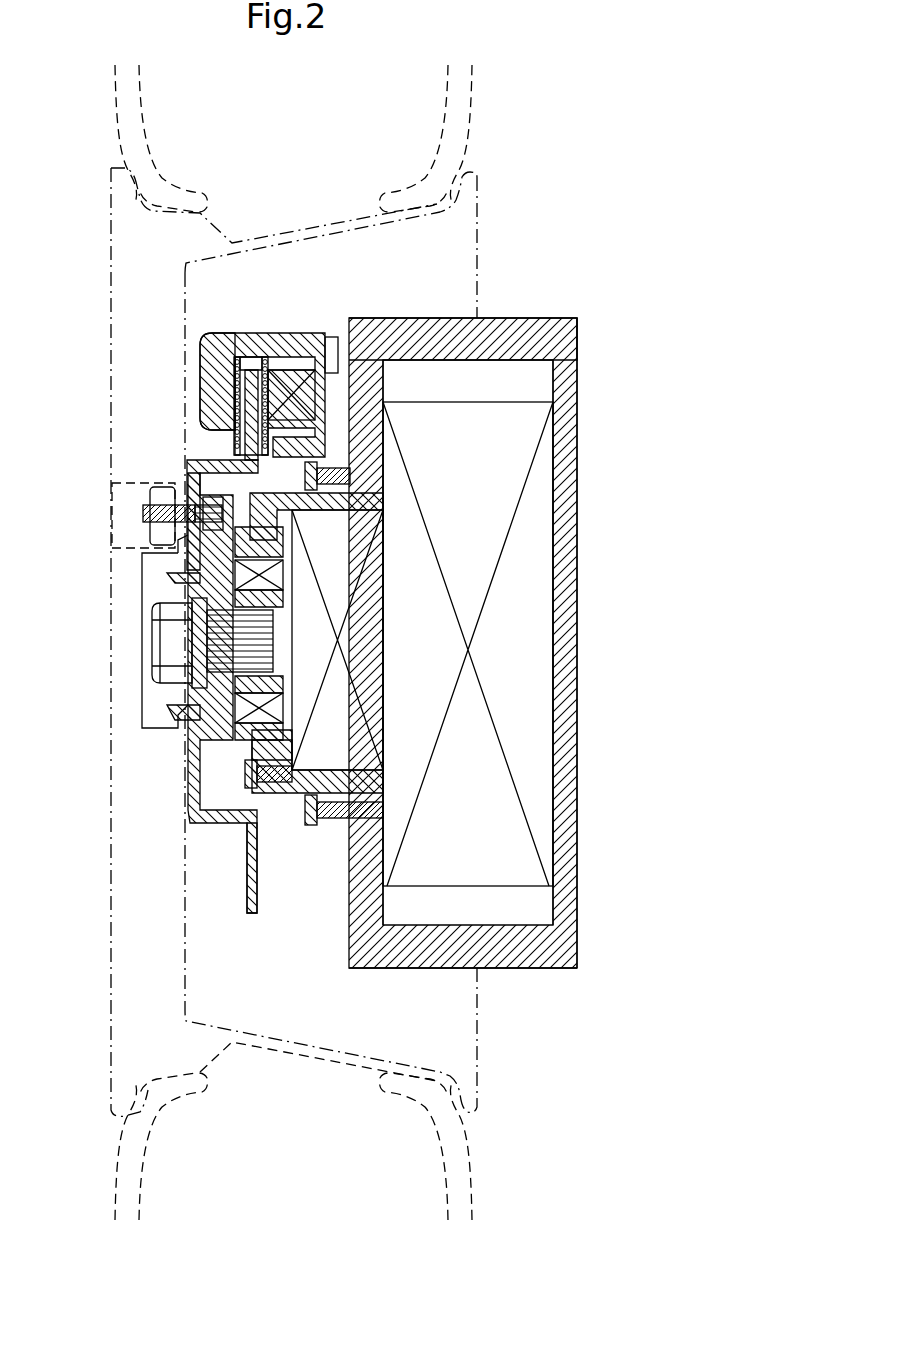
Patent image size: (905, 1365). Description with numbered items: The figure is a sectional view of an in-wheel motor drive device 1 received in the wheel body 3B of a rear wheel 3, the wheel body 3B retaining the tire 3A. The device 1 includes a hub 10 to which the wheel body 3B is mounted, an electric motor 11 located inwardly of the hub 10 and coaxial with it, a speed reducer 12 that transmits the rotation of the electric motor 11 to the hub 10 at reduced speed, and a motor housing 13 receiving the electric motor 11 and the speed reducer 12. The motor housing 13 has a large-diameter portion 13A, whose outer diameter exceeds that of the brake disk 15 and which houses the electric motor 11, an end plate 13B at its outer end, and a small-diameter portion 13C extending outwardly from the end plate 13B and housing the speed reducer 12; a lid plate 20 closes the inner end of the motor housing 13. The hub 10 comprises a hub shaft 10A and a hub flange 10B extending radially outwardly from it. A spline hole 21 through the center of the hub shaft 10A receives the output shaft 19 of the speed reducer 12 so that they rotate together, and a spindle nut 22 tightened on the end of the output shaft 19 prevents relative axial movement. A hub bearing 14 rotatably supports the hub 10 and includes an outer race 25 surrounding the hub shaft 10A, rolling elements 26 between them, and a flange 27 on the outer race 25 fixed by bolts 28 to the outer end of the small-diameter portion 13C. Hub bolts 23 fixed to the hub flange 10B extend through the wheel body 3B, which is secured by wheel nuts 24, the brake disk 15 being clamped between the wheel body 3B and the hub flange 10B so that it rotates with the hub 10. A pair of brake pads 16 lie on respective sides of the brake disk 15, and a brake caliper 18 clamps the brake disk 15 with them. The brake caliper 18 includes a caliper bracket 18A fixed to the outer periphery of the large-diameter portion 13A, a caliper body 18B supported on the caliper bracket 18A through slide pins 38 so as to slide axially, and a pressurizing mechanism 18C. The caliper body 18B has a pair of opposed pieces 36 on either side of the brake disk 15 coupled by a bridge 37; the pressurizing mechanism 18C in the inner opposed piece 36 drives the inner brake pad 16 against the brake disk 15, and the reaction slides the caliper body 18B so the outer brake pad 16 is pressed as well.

The in-wheel motor drive device 1 is at (589, 316).
The rear wheel 3 is at (118, 1168).
The tire 3A is at (115, 100).
The wheel body 3B is at (112, 187).
The hub 10 is at (200, 808).
The hub shaft 10A is at (195, 597).
The hub flange 10B is at (190, 470).
The electric motor 11 is at (537, 488).
The speed reducer 12 is at (376, 615).
The motor housing 13 is at (528, 968).
The large-diameter portion 13A is at (516, 318).
The end plate 13B is at (383, 395).
The small-diameter portion 13C is at (317, 510).
The hub bearing 14 is at (235, 745).
The brake disk 15 is at (251, 913).
The brake pads 16 is at (238, 350).
The brake caliper 18 is at (215, 340).
The caliper bracket 18A is at (232, 447).
The caliper body 18B is at (205, 357).
The pressurizing mechanism 18C is at (317, 330).
The output shaft 19 is at (280, 652).
The lid plate 20 is at (565, 740).
The spline hole 21 is at (232, 670).
The spindle nut 22 is at (173, 632).
The hub bolts 23 is at (140, 518).
The wheel nuts 24 is at (155, 535).
The outer race 25 is at (232, 752).
The rolling elements 26 is at (230, 710).
The flange 27 is at (262, 787).
The bolts 28 is at (247, 780).
The opposed pieces 36 is at (296, 350).
The bridge 37 is at (252, 350).
The slide pins 38 is at (340, 322).